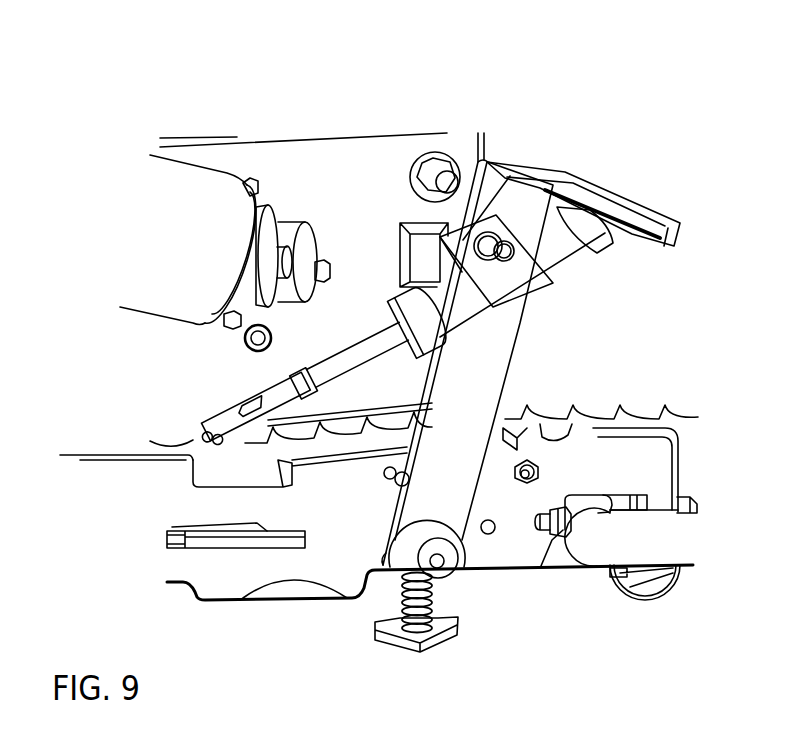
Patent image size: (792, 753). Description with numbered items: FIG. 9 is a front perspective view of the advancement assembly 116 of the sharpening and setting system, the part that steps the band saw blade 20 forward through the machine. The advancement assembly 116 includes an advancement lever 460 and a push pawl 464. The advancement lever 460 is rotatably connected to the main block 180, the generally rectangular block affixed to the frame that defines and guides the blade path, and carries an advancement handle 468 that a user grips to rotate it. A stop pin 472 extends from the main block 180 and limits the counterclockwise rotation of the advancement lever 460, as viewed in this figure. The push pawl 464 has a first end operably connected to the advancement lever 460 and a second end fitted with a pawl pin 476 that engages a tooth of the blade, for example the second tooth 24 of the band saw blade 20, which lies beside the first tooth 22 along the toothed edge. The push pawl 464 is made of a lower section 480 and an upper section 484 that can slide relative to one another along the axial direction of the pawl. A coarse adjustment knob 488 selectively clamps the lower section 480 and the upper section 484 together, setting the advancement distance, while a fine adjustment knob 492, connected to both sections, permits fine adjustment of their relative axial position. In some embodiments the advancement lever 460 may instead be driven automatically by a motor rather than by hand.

The advancement assembly 116 is at (410, 296).
The advancement handle 468 is at (615, 203).
The coarse adjustment knob 488 is at (607, 240).
The upper section 484 is at (560, 262).
The advancement lever 460 is at (500, 352).
The fine adjustment knob 492 is at (387, 292).
The lower section 480 is at (378, 342).
The push pawl 464 is at (293, 376).
The pawl pin 476 is at (203, 441).
The stop pin 472 is at (388, 472).
The second tooth 24 is at (195, 443).
The first tooth 22 is at (223, 467).
The band saw blade 20 is at (240, 467).
The main block 180 is at (668, 464).